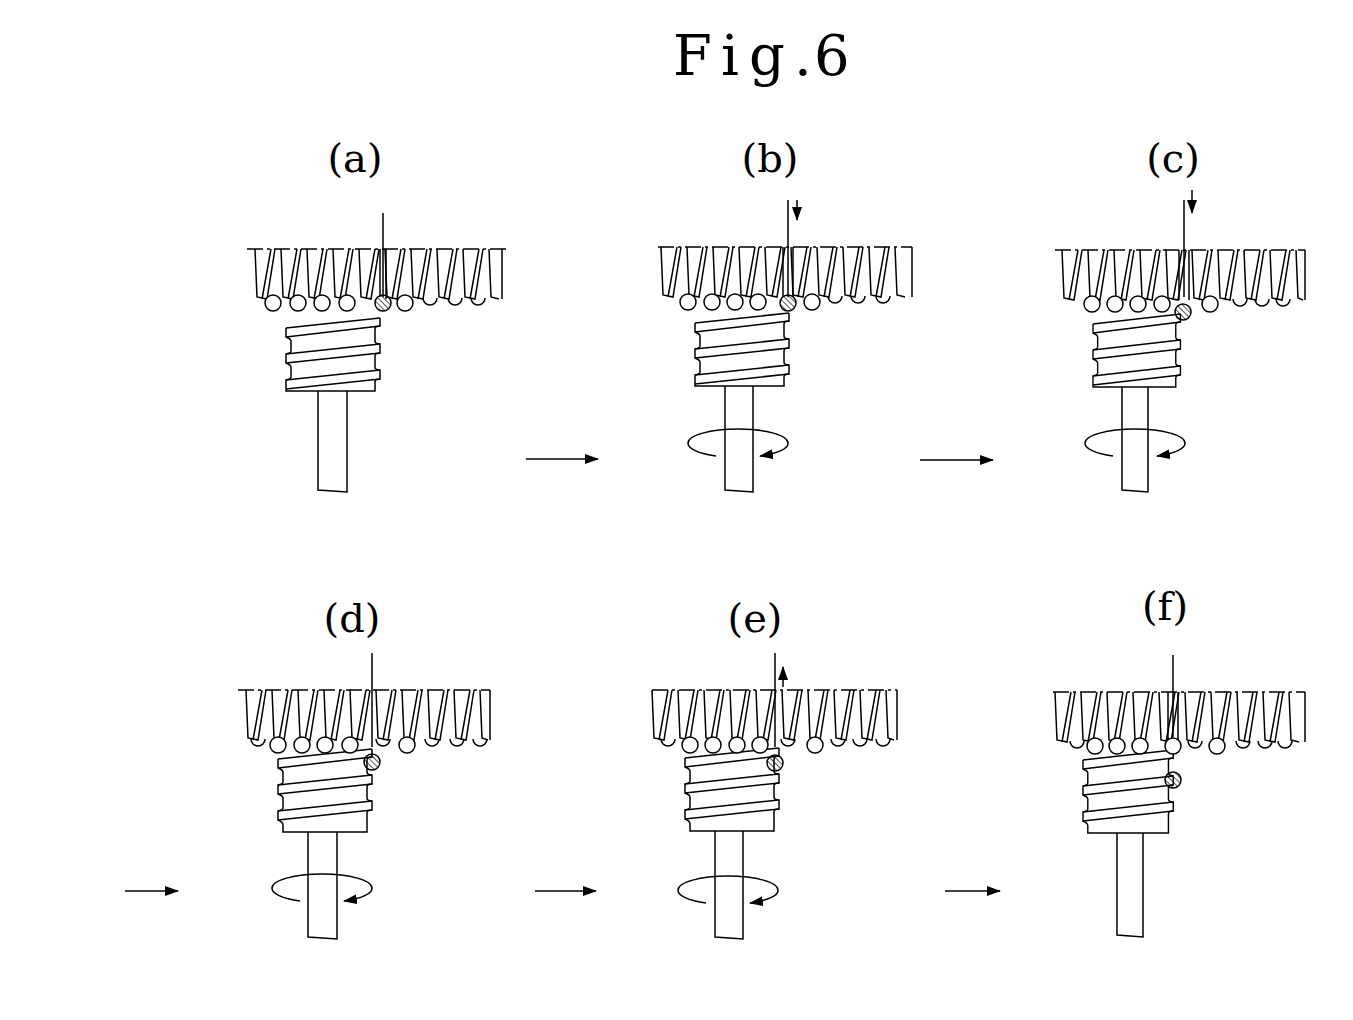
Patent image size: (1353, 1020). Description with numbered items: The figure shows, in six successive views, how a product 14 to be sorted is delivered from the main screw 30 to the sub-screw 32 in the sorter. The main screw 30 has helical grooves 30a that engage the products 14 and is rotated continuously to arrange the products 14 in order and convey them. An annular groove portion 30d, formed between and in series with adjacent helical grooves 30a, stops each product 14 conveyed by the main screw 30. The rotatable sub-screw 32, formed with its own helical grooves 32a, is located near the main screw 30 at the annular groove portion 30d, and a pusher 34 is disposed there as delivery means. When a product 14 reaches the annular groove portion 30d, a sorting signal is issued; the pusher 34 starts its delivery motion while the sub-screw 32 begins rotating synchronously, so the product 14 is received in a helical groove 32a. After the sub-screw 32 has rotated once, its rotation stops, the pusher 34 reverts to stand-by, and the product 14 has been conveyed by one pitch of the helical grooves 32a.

The product to be sorted 14 is at (272, 312).
The main screw 30 is at (483, 310).
The helical groove 30a is at (432, 307).
The annular groove portion 30d is at (378, 251).
The sub-screw 32 is at (309, 396).
The helical groove 32a is at (288, 372).
The pusher 34 is at (383, 228).